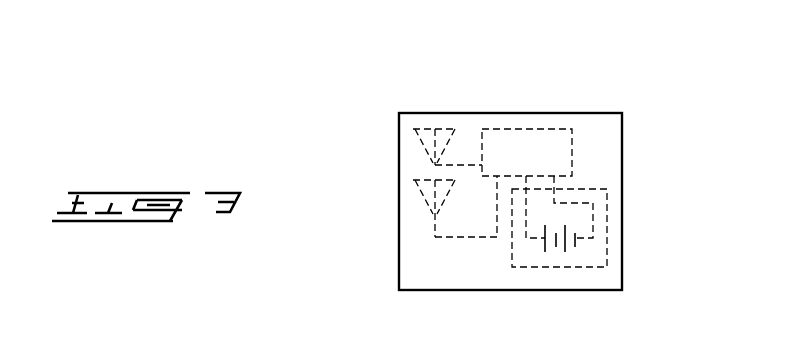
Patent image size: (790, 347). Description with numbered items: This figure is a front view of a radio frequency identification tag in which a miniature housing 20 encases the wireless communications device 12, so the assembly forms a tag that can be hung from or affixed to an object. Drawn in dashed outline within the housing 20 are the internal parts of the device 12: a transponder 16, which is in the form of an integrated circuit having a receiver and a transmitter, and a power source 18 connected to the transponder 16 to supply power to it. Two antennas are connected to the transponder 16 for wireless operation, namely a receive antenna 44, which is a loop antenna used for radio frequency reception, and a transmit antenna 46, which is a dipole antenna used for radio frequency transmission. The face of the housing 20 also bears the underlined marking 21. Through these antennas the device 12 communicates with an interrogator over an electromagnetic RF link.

The wireless communications device 12 is at (593, 155).
The transponder 16 is at (544, 124).
The power source 18 is at (608, 228).
The housing 20 is at (520, 216).
The housing surface 21 is at (455, 278).
The receive antenna 44 is at (438, 126).
The transmit antenna 46 is at (423, 196).